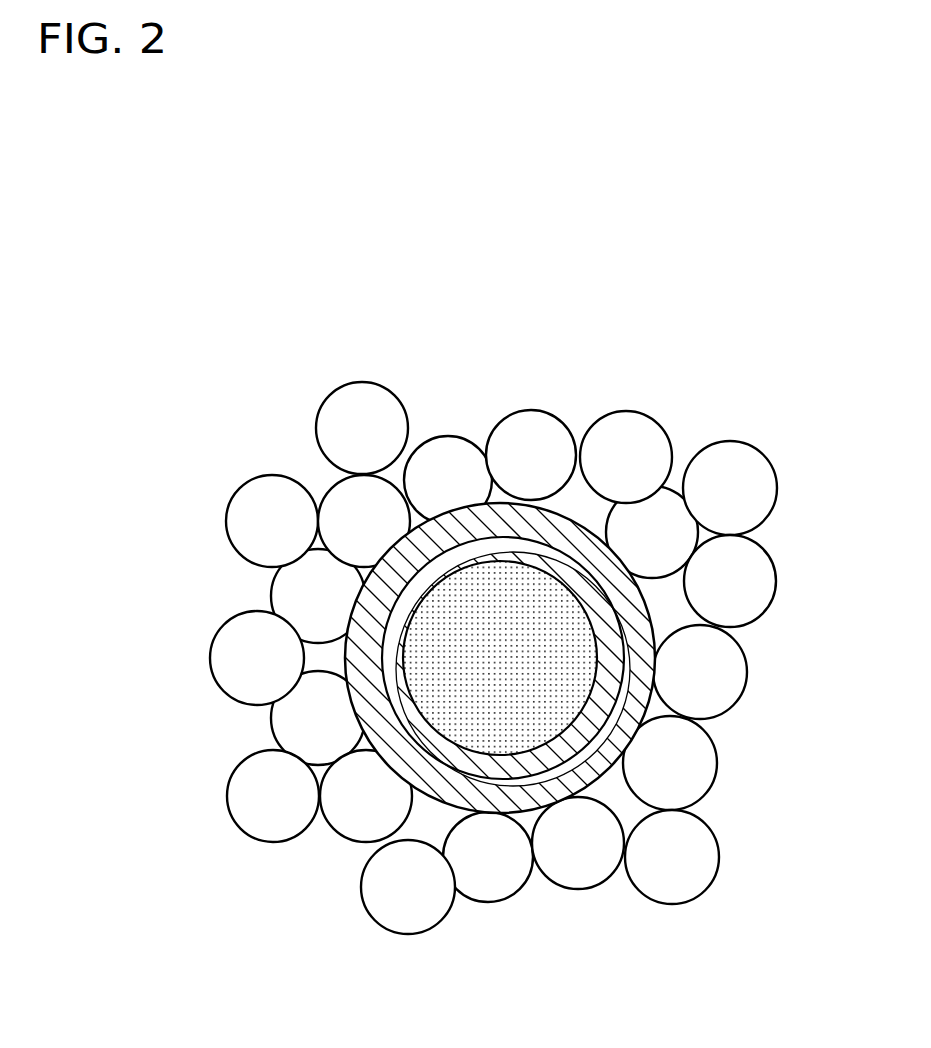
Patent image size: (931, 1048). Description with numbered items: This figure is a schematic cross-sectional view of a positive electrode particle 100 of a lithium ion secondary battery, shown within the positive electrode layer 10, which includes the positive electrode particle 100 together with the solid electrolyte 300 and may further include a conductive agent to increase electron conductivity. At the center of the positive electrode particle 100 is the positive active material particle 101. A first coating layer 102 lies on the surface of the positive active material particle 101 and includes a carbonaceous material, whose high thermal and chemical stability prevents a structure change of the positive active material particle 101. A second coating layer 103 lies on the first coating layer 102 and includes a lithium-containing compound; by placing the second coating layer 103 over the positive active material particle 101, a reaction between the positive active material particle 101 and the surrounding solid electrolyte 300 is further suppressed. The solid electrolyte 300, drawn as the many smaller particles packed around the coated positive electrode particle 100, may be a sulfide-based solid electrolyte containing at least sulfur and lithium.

The positive electrode layer 10 is at (487, 626).
The positive electrode particle 100 is at (599, 626).
The positive active material particle 101 is at (628, 658).
The first coating layer 102 is at (617, 661).
The second coating layer 103 is at (599, 626).
The solid electrolyte 300 is at (457, 658).